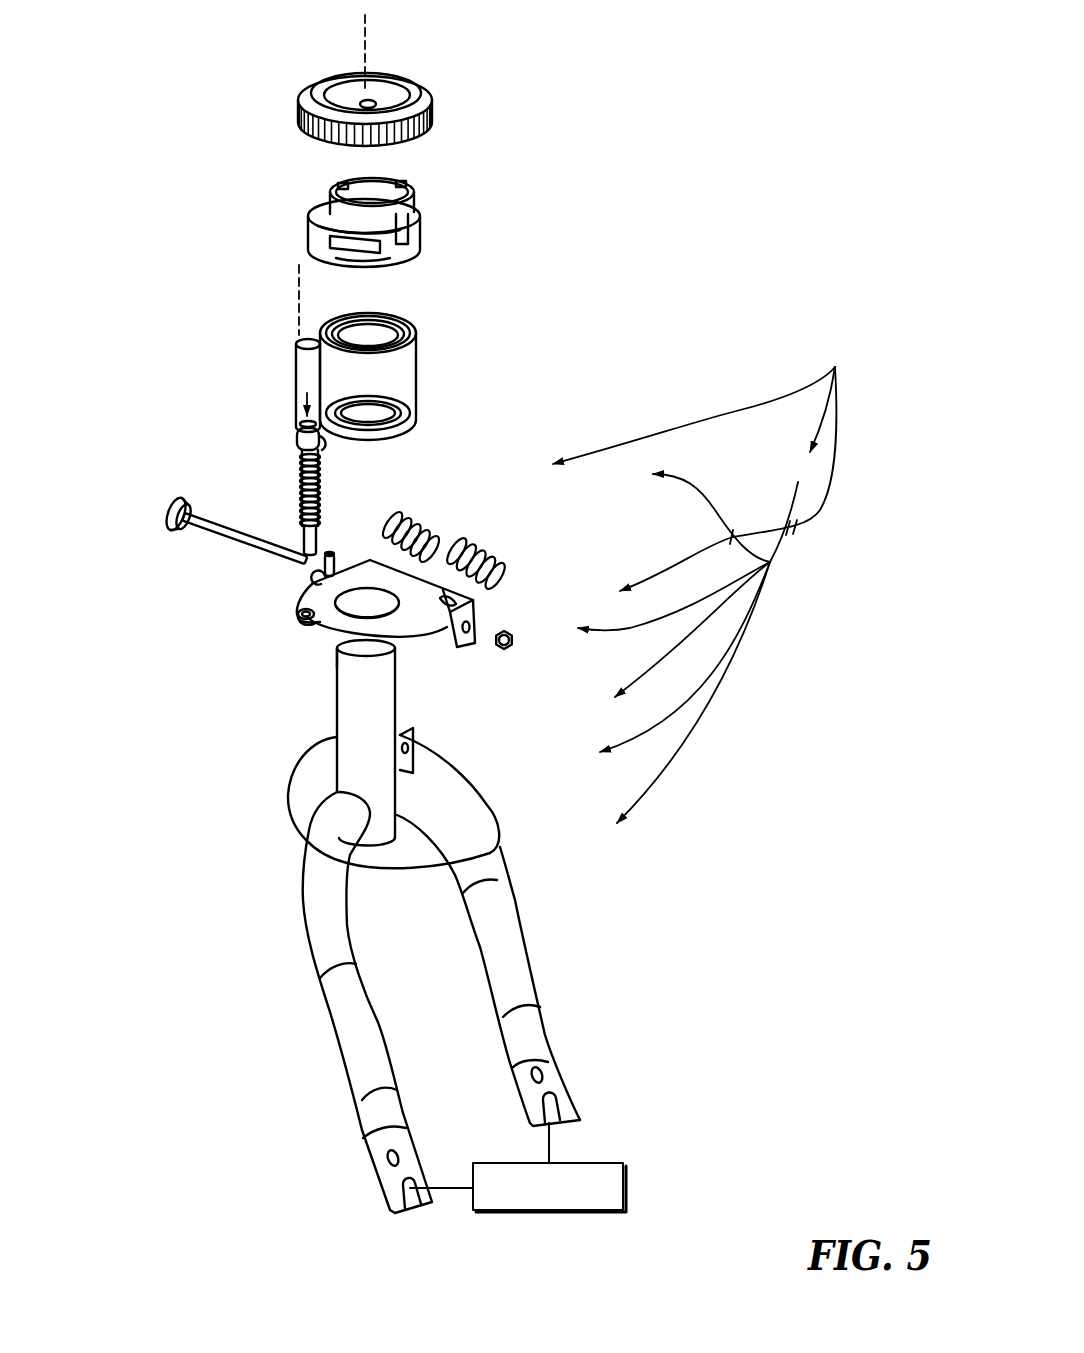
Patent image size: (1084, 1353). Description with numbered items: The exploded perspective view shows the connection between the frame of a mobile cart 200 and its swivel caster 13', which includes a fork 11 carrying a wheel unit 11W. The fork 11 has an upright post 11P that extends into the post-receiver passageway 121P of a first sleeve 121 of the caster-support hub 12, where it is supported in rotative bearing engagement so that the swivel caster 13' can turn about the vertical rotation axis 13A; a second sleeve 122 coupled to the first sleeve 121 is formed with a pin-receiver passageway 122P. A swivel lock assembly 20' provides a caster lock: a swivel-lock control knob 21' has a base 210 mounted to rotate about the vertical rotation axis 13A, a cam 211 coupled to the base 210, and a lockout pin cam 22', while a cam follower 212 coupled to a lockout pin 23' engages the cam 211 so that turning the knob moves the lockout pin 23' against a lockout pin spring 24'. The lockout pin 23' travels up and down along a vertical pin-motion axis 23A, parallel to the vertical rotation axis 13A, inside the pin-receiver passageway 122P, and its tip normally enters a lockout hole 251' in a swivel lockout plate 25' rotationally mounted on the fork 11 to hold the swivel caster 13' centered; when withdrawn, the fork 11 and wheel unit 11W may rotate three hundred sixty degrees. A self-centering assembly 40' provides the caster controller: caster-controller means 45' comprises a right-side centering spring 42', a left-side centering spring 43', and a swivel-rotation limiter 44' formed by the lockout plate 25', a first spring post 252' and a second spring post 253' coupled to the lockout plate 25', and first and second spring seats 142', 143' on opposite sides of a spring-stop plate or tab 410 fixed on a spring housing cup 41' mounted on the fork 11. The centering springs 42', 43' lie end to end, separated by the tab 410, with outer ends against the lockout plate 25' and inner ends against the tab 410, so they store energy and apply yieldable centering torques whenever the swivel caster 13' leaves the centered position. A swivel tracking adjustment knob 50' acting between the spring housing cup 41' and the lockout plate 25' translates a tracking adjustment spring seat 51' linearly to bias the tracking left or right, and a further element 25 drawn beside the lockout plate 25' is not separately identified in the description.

The mobile cart 200 is at (733, 206).
The swivel lock assembly 20' is at (296, 255).
The vertical rotation axis 13A is at (367, 26).
The swivel-lock control knob 21' is at (411, 105).
The base 210 is at (420, 218).
The cam 211 is at (355, 263).
The lockout pin cam 22' is at (255, 296).
The vertical pin-motion axis 23A is at (299, 287).
The caster-support hub 12 is at (337, 380).
The first sleeve 121 is at (392, 378).
The post-receiver passageway 121P is at (416, 347).
The second sleeve 122 is at (296, 385).
The pin-receiver passageway 122P is at (300, 389).
The cam follower 212 is at (293, 438).
The lockout pin 23' is at (250, 502).
The lockout pin spring 24' is at (368, 484).
The swivel tracking adjustment knob 50' is at (193, 543).
The tracking adjustment spring seat 51' is at (253, 604).
The self-centering assembly 40' is at (448, 571).
The left-side centering spring 43' is at (466, 509).
The right-side centering spring 42' is at (527, 569).
The swivel lockout plate 25' is at (475, 551).
The first spring post 252' is at (519, 639).
The second spring post 253' is at (532, 671).
The ring 25 is at (267, 644).
The lockout hole 251' is at (266, 687).
The caster-controller means 45' is at (705, 577).
The swivel-rotation limiter 44' is at (803, 467).
The swivel caster 13' is at (466, 931).
The spring housing cup 41' is at (417, 743).
The upright post 11P is at (347, 672).
The first spring seat 142' is at (491, 750).
The tab 410 is at (416, 758).
The second spring seat 143' is at (449, 841).
The fork 11 is at (355, 1055).
The wheel unit 11W is at (623, 1190).